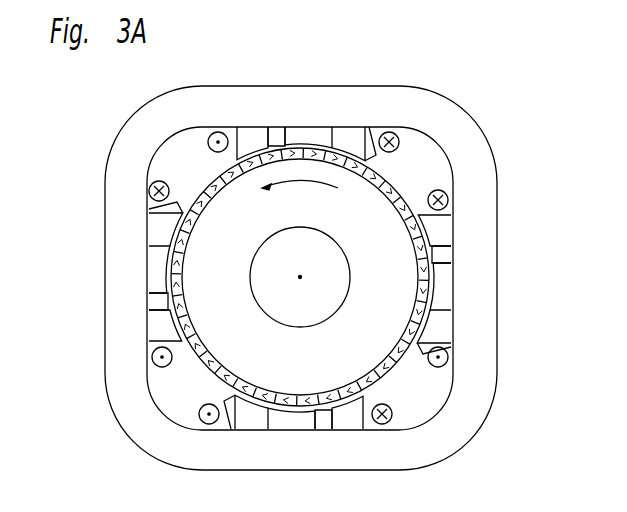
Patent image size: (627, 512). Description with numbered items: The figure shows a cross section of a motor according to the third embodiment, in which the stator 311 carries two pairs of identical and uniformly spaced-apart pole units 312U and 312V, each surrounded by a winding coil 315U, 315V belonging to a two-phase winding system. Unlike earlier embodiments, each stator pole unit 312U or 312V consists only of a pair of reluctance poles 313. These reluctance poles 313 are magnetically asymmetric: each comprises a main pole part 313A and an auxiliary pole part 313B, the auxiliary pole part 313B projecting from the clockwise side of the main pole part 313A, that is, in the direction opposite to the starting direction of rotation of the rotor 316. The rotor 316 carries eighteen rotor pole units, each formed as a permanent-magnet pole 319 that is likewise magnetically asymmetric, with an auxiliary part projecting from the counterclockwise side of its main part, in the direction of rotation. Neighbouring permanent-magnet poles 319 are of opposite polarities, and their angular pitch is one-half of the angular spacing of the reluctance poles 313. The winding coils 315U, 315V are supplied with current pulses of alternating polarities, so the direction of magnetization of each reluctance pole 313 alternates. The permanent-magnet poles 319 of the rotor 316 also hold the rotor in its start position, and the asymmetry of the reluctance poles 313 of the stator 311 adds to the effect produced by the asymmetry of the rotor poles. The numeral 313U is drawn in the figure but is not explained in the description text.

The stator 311 is at (478, 361).
The pole unit 312U is at (312, 121).
The pole unit 312V is at (468, 260).
The reluctance pole 313 is at (233, 127).
The main pole part 313A is at (258, 127).
The auxiliary pole part 313B is at (275, 127).
The U-phase fastening screw 313U is at (404, 130).
The winding coil 315V is at (145, 182).
The winding coil 315U is at (395, 427).
The rotor 316 is at (192, 371).
The permanent-magnet pole 319 is at (437, 296).